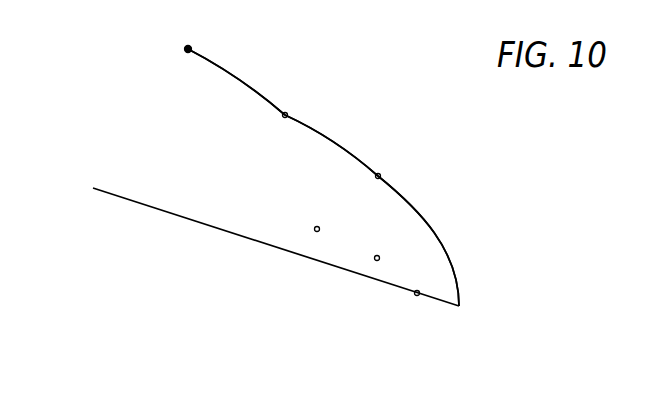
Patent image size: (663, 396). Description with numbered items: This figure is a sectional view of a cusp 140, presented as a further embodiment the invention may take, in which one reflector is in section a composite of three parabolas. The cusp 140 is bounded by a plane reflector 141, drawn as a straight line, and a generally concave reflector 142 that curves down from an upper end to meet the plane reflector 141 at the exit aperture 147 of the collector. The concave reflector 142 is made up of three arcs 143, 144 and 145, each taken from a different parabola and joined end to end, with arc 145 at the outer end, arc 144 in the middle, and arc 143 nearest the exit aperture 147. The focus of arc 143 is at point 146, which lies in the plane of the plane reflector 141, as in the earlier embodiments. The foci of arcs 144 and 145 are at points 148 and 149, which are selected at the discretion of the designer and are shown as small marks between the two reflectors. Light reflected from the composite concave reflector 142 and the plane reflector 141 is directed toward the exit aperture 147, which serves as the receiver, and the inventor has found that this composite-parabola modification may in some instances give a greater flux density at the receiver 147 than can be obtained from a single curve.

The cusp 140 is at (142, 142).
The plane reflector 141 is at (195, 223).
The generally concave reflector 142 is at (373, 97).
The arc 143 is at (437, 230).
The arc 144 is at (357, 152).
The arc 145 is at (243, 75).
The focus point 146 is at (417, 290).
The exit aperture 147 is at (440, 304).
The focus point 148 is at (374, 256).
The focus point 149 is at (313, 227).